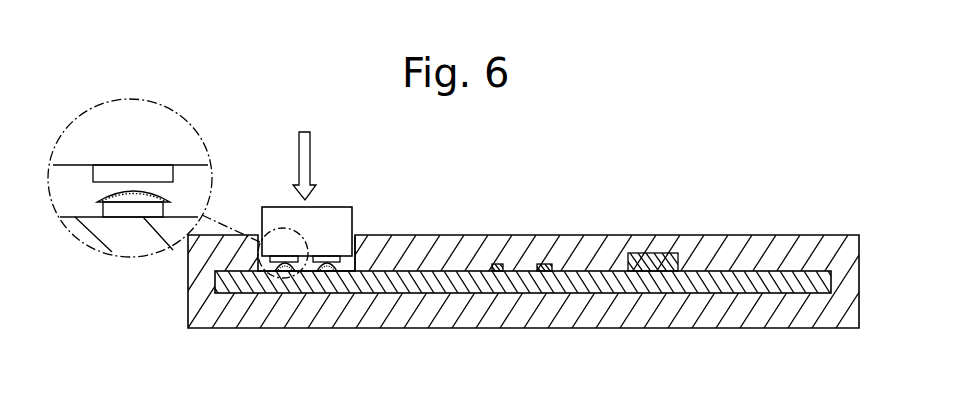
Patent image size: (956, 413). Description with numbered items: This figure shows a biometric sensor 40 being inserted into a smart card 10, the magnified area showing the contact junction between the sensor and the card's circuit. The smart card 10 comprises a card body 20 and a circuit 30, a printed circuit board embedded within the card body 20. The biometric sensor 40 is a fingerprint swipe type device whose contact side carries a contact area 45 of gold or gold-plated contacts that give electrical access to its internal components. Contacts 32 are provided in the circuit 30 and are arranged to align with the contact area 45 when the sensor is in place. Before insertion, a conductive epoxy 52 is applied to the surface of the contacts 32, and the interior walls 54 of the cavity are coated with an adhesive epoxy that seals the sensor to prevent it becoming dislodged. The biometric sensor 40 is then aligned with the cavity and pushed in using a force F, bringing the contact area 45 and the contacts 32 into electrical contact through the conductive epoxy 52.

The smart card 10 is at (530, 234).
The card body 20 is at (562, 235).
The circuit 30 is at (710, 288).
The biometric sensor 40 is at (325, 211).
The contact area 45 is at (118, 173).
The conductive epoxy 52 is at (170, 203).
The interior walls 54 is at (355, 246).
The contacts 32 is at (126, 212).